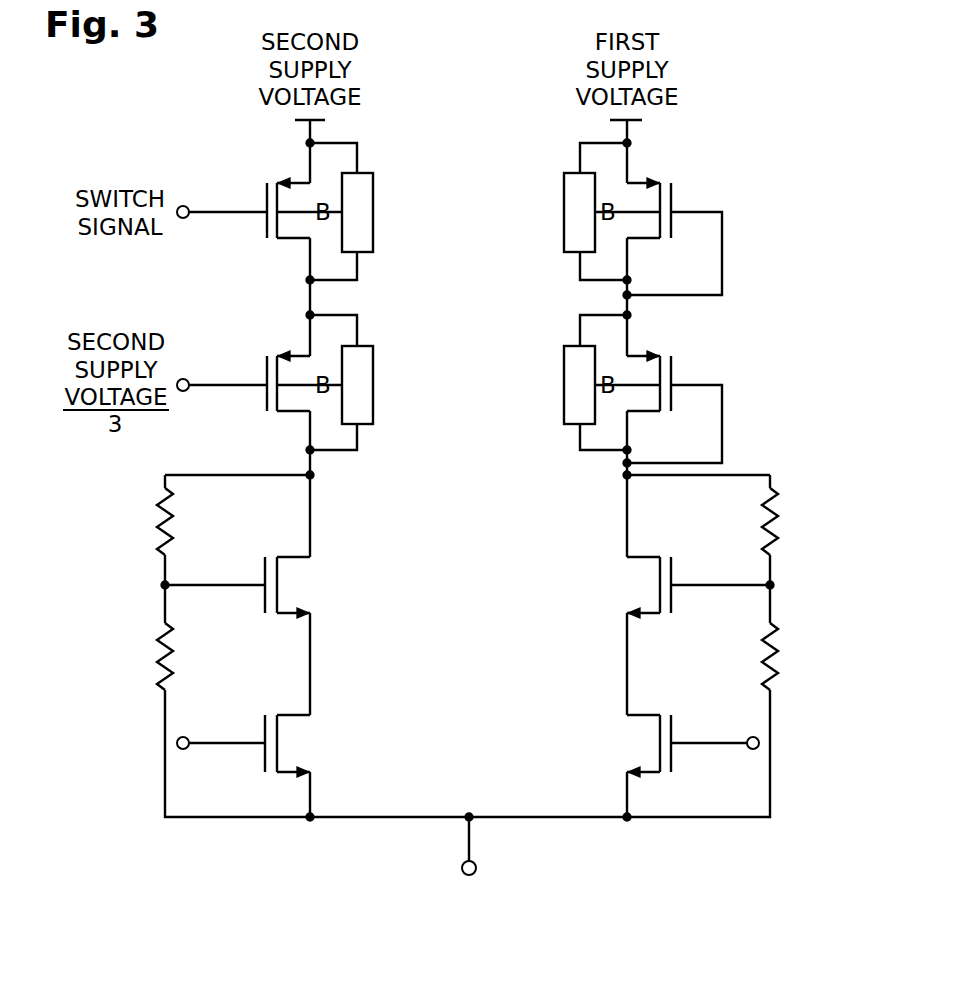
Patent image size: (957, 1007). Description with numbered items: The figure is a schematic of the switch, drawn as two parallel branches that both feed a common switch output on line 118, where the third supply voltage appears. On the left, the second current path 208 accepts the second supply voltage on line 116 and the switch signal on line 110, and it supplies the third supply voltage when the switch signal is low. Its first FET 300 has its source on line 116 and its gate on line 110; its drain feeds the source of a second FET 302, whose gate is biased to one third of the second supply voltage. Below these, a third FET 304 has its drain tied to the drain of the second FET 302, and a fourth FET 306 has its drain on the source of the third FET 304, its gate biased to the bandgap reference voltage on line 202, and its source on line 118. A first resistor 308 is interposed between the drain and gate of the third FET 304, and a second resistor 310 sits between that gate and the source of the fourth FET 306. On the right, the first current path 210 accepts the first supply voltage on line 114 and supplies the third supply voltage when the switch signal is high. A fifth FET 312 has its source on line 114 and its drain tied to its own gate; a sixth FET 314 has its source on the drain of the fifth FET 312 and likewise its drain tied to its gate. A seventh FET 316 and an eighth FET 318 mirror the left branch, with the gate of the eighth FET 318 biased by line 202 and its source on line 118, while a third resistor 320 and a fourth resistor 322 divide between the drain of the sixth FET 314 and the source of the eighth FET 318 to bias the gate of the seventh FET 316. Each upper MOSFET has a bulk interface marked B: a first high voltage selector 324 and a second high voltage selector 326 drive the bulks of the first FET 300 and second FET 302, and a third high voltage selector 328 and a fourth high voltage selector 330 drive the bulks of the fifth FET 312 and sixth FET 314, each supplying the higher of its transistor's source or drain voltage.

The line carrying second supply voltage 116 is at (307, 138).
The line carrying first supply voltage 114 is at (630, 137).
The first field effect transistor 300 is at (260, 174).
The switch signal line 110 is at (238, 216).
The first high voltage selector 324 is at (373, 214).
The second field effect transistor 302 is at (262, 348).
The second high voltage selector 326 is at (373, 386).
The fifth field effect transistor 312 is at (668, 178).
The third high voltage selector 328 is at (564, 214).
The sixth field effect transistor 314 is at (668, 350).
The fourth high voltage selector 330 is at (564, 386).
The first resistor 308 is at (150, 487).
The second resistor 310 is at (150, 615).
The third resistor 320 is at (787, 488).
The fourth resistor 322 is at (787, 618).
The third field effect transistor 304 is at (285, 634).
The fourth field effect transistor 306 is at (284, 701).
The seventh field effect transistor 316 is at (619, 585).
The eighth field effect transistor 318 is at (619, 743).
The bandgap reference voltage line 202 is at (226, 746).
The switch output line 118 is at (472, 835).
The second current path 208 is at (256, 852).
The first current path 210 is at (696, 852).